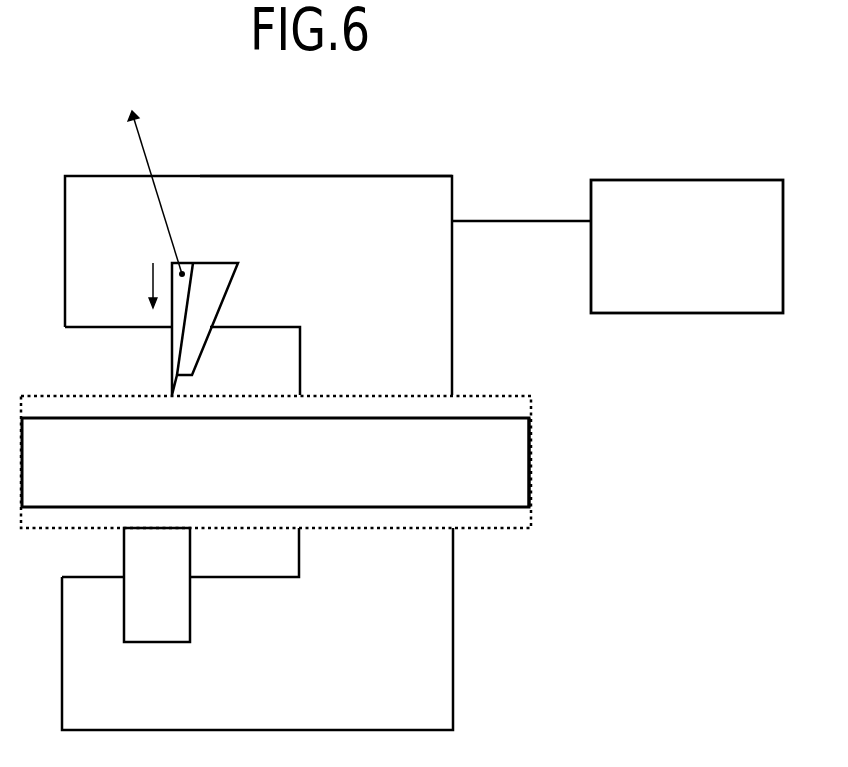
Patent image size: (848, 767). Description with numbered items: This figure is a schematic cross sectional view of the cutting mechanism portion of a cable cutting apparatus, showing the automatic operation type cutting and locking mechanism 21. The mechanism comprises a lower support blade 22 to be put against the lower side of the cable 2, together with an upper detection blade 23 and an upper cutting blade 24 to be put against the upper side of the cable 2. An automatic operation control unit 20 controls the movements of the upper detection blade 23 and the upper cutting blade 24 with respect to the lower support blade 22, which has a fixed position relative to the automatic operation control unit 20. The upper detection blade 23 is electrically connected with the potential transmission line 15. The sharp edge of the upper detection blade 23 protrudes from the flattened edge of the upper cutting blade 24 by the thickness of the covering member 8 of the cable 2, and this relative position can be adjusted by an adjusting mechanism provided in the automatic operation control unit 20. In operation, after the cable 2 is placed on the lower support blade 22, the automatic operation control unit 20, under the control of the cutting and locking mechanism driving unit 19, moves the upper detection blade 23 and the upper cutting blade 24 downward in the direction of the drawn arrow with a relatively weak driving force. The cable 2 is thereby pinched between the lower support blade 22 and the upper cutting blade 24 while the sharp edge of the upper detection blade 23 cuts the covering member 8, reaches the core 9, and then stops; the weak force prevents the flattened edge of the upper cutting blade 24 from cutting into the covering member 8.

The cable 2 is at (531, 471).
The covering member 8 is at (472, 362).
The core 9 is at (531, 493).
The potential transmission line 15 is at (141, 143).
The cutting and locking mechanism driving unit 19 is at (688, 180).
The automatic operation control unit 20 is at (403, 176).
The automatic operation type cutting and locking mechanism 21 is at (328, 168).
The lower support blade 22 is at (124, 565).
The upper detection blade 23 is at (190, 263).
The upper cutting blade 24 is at (230, 263).